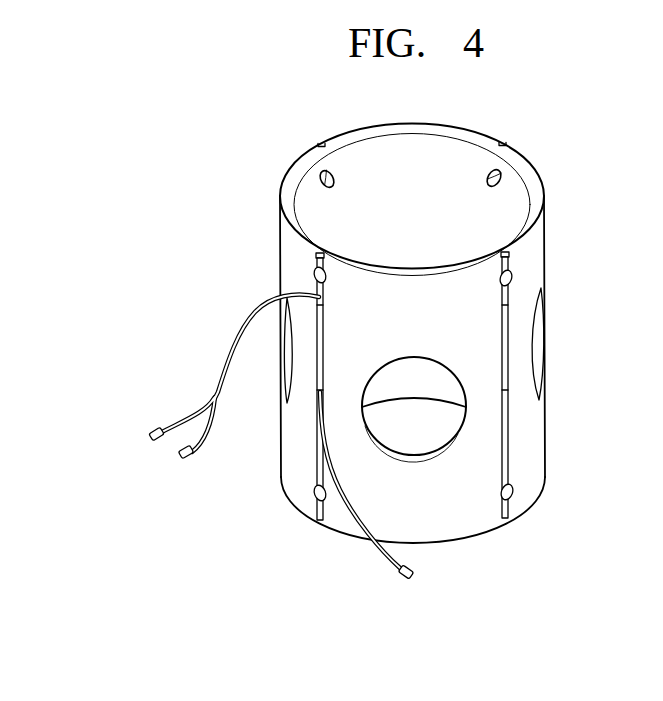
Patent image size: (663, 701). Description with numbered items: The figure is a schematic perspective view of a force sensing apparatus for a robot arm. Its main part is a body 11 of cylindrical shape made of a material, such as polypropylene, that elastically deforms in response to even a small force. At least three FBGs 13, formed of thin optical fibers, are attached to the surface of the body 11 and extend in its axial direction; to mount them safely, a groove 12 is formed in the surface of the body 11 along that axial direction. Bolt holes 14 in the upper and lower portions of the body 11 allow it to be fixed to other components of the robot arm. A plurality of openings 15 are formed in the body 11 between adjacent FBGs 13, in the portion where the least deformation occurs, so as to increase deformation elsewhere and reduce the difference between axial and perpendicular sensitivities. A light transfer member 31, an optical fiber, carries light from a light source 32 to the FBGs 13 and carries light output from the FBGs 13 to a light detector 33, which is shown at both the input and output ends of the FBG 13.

The body 11 is at (537, 427).
The groove 12 is at (508, 262).
The FBGs 13 is at (318, 373).
The bolt holes 14 is at (508, 280).
The openings 15 is at (423, 427).
The light transfer member 31 is at (233, 338).
The light source 32 is at (155, 427).
The light detector 33 is at (192, 458).